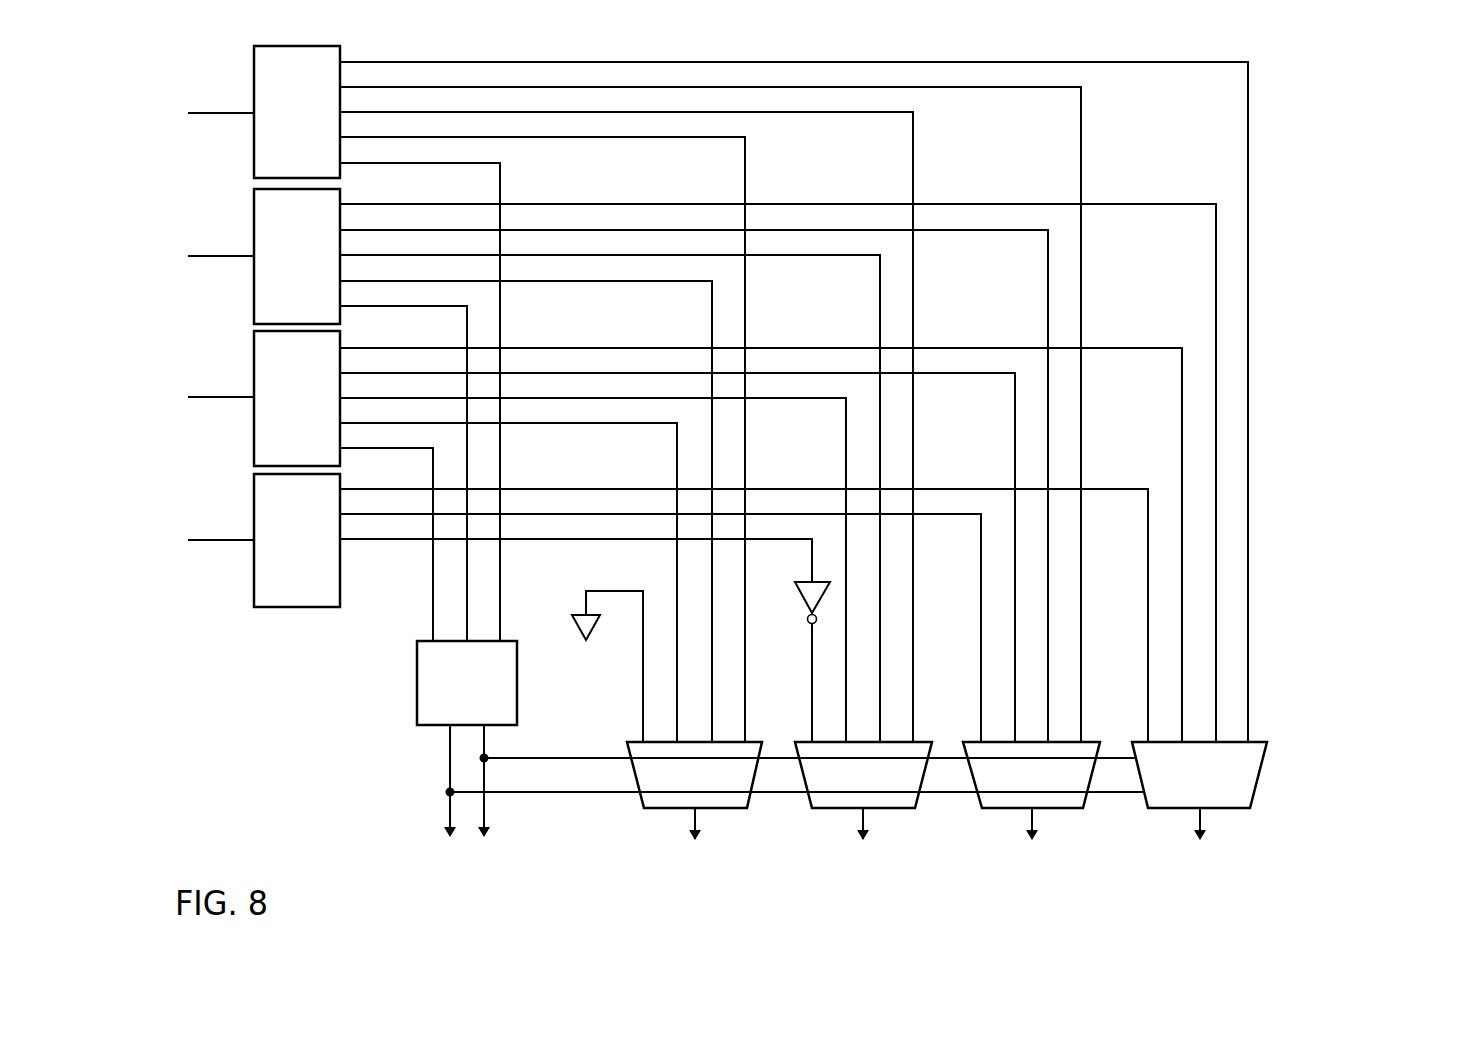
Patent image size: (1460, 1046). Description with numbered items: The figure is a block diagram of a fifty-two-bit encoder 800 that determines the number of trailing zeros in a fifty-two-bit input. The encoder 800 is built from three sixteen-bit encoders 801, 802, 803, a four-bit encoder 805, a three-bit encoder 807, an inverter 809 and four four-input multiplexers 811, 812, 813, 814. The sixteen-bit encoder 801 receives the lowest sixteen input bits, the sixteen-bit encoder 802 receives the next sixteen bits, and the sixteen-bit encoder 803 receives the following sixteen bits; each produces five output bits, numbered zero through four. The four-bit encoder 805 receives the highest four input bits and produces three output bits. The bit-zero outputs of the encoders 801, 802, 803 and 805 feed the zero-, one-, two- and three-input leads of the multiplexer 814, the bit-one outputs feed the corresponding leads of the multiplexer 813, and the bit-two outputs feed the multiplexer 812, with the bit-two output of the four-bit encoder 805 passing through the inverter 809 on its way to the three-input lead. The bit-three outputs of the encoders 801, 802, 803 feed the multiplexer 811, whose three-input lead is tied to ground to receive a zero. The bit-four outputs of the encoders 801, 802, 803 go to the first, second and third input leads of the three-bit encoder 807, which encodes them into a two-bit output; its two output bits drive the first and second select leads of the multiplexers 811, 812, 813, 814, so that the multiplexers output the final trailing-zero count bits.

The fifty-two-bit encoder 800 is at (1305, 168).
The sixteen-bit encoder 801 is at (254, 68).
The sixteen-bit encoder 802 is at (254, 209).
The sixteen-bit encoder 803 is at (254, 353).
The four-bit encoder 805 is at (254, 496).
The three-bit encoder 807 is at (417, 672).
The inverter 809 is at (806, 600).
The multiplexer 811 is at (731, 809).
The multiplexer 812 is at (899, 809).
The multiplexer 813 is at (1067, 809).
The multiplexer 814 is at (1235, 809).